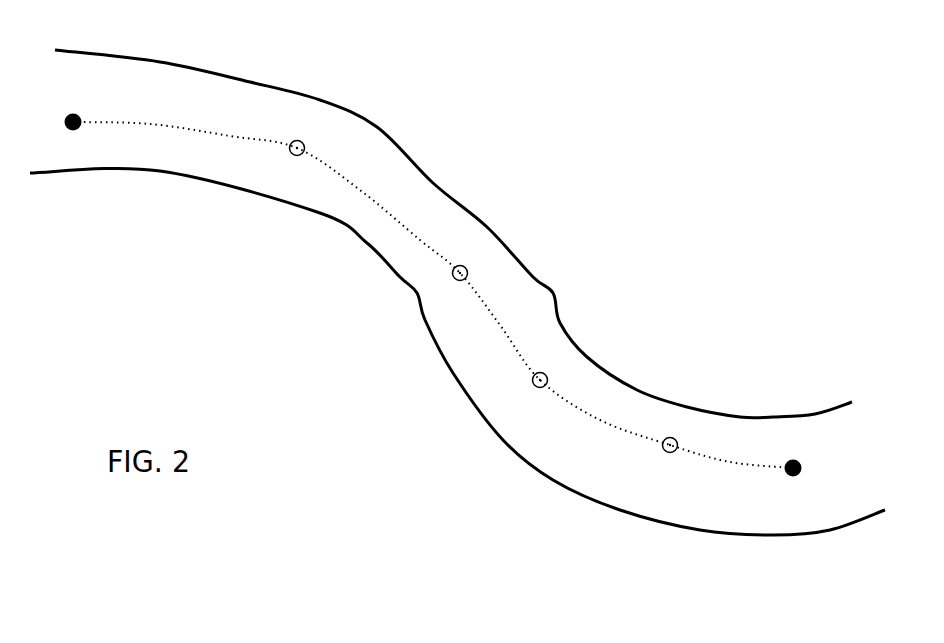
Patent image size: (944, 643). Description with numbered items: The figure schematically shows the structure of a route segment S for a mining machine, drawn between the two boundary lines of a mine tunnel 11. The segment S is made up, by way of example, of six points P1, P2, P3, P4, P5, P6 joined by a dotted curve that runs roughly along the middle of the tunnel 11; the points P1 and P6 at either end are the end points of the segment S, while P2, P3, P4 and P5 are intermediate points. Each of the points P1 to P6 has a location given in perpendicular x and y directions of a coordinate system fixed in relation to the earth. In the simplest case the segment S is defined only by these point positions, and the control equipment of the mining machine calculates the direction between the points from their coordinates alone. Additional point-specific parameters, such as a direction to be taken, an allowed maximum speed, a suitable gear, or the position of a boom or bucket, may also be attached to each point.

The mine tunnel 11 is at (163, 172).
The segment S is at (418, 206).
The end point of segment P1 is at (79, 103).
The point of segment P2 is at (303, 129).
The point of segment P3 is at (456, 298).
The point of segment P4 is at (543, 406).
The point of segment P5 is at (671, 465).
The end point of segment P6 is at (794, 491).